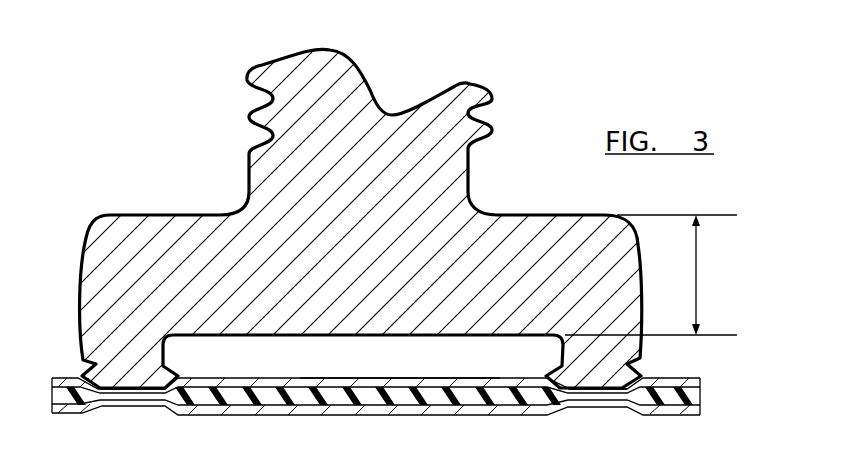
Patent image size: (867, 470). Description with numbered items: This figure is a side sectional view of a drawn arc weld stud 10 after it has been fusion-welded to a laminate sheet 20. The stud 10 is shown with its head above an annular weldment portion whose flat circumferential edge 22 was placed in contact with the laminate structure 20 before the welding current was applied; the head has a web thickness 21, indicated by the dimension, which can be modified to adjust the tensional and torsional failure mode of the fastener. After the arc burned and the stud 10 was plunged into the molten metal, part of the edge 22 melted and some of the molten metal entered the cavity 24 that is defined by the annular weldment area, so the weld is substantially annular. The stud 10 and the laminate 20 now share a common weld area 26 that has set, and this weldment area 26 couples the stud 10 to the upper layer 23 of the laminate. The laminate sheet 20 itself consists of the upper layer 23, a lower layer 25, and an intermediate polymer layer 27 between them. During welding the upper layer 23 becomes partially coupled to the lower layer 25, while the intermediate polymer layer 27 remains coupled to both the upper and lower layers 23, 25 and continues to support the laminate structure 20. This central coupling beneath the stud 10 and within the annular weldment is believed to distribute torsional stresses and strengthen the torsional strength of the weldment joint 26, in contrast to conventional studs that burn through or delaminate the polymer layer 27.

The stud 10 is at (244, 118).
The laminate sheet 20 is at (264, 396).
The web thickness 21 is at (651, 275).
The flat edge 22 is at (160, 393).
The upper layer 23 is at (690, 378).
The cavity 24 is at (443, 358).
The lower layer 25 is at (673, 408).
The weldment area 26 is at (136, 380).
The intermediate polymer layer 27 is at (314, 398).